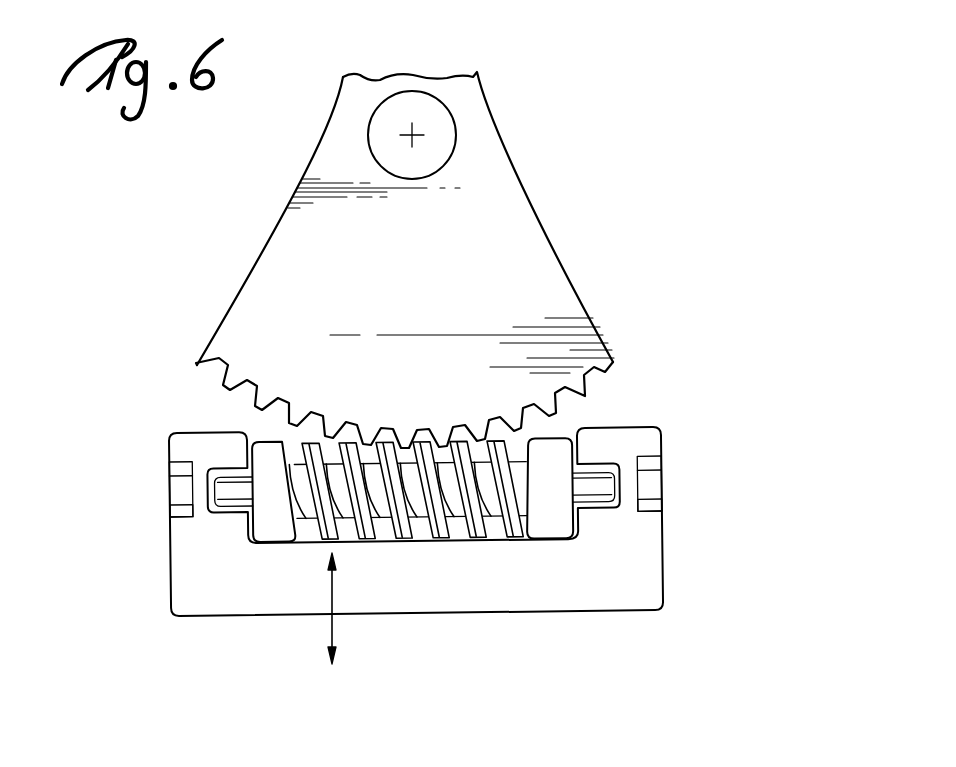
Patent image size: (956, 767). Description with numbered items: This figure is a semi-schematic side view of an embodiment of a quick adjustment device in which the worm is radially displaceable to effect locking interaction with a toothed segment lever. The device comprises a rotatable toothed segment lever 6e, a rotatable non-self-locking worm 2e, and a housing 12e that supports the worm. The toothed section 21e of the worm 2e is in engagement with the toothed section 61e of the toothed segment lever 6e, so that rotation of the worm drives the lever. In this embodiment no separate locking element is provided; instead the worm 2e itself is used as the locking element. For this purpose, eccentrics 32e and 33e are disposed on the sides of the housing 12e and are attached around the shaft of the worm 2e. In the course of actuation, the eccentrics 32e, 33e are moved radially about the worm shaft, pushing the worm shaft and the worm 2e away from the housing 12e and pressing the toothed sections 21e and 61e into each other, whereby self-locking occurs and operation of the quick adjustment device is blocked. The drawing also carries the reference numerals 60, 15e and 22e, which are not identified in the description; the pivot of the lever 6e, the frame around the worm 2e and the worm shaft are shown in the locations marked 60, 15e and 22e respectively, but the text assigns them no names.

The pivot axis of toothed sector 60 is at (420, 128).
The toothed segment lever 6e is at (439, 260).
The toothed section 61e is at (477, 414).
The housing / bearing frame 15e is at (209, 524).
The eccentric 33e is at (182, 488).
The eccentric 32e is at (178, 512).
The worm shaft journal 22e is at (230, 500).
The worm 2e is at (413, 555).
The toothed section 21e is at (460, 541).
The housing 12e is at (385, 578).